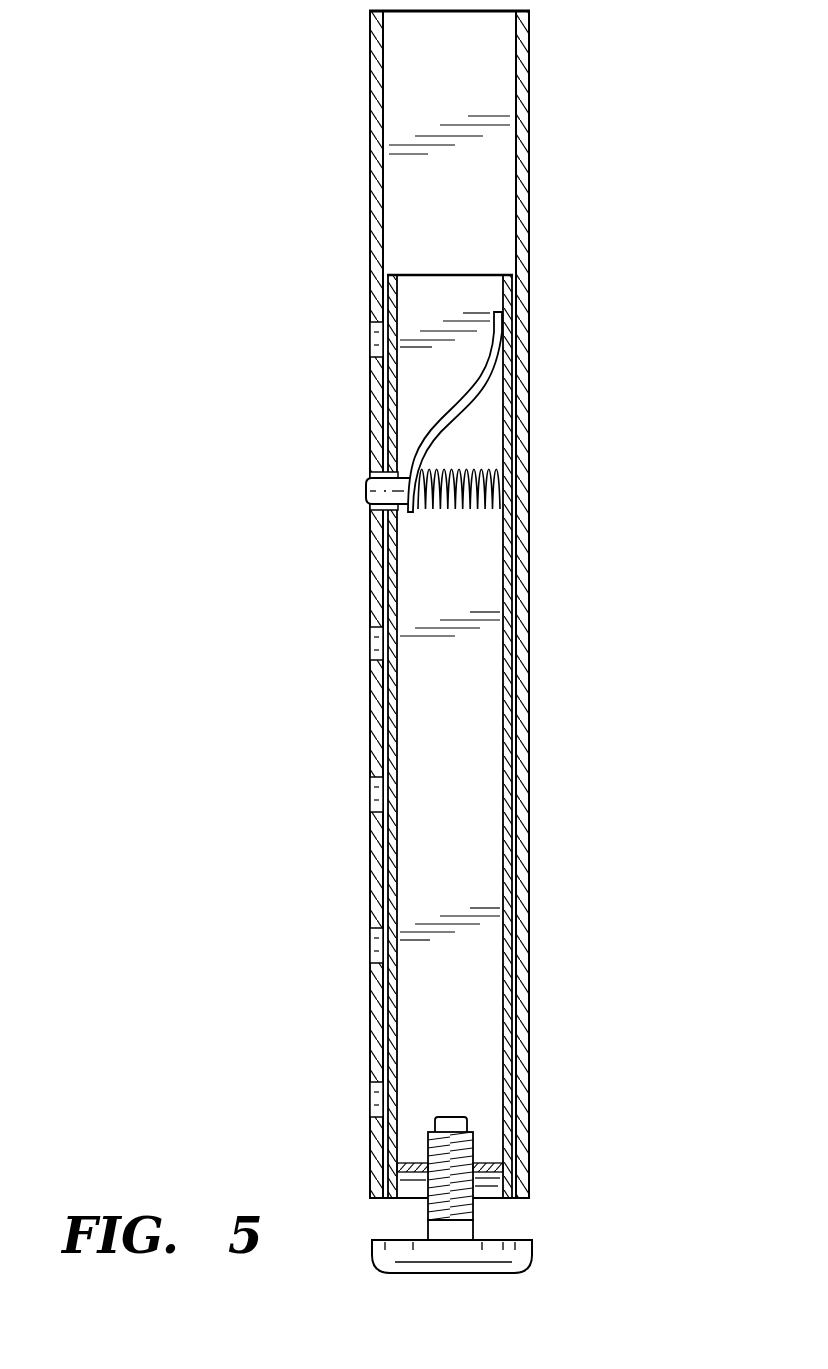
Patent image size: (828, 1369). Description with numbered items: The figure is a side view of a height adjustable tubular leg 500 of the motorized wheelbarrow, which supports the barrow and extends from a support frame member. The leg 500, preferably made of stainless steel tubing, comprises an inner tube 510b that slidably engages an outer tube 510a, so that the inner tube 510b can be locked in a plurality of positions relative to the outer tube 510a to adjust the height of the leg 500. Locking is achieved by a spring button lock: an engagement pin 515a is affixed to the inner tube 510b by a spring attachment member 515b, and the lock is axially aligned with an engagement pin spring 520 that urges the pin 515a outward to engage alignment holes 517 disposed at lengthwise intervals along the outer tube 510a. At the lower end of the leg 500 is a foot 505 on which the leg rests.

The tubular leg 500 is at (387, 663).
The foot 505 is at (530, 1262).
The outer tube 510a is at (423, 287).
The inner tube 510b is at (523, 200).
The engagement pin 515a is at (368, 490).
The spring attachment member 515b is at (458, 412).
The alignment holes 517 is at (370, 345).
The engagement pin spring 520 is at (436, 512).